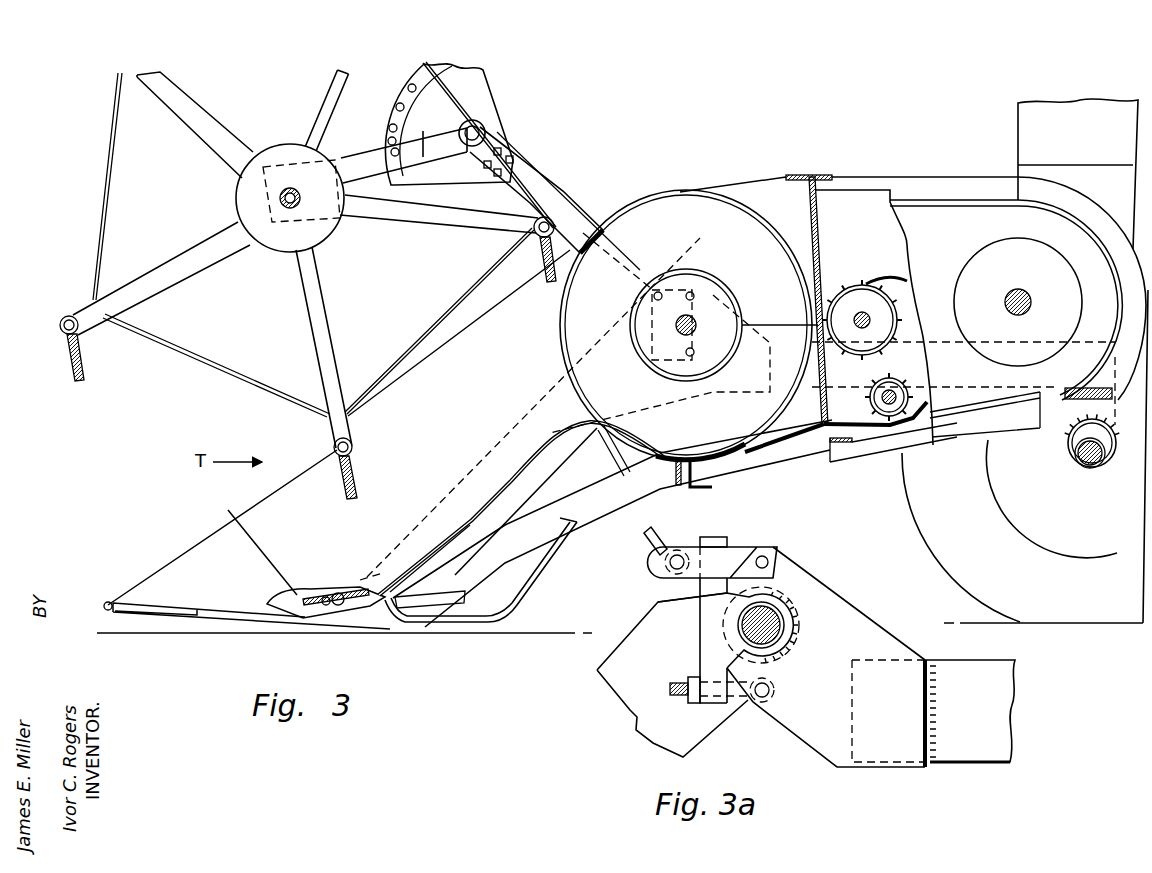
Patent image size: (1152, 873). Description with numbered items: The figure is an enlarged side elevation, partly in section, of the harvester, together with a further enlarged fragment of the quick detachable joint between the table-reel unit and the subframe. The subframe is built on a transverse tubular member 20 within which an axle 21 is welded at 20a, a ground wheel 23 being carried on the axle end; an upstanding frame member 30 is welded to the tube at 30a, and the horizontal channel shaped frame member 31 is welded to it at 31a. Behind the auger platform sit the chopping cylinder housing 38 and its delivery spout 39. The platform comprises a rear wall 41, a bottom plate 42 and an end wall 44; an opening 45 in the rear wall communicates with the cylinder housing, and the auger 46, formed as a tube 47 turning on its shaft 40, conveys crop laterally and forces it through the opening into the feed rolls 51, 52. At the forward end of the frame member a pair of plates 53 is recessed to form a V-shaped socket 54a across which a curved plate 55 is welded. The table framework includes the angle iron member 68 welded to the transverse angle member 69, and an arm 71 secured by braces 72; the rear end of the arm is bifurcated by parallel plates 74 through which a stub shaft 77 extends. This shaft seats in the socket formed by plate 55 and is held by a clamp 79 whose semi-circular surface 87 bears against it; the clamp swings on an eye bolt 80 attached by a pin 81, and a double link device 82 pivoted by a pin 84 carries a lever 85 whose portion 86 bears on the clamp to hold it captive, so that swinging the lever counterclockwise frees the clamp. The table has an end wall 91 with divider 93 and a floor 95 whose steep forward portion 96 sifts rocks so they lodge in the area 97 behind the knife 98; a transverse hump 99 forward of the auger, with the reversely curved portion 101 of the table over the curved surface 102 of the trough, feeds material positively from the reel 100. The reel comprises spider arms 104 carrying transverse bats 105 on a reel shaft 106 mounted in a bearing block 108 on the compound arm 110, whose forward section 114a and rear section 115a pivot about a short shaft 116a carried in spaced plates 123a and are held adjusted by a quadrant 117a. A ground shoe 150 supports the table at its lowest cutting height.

In FIG. 3, the axle supporting tubular member 20 is at (1098, 464).
In FIG. 3, the weld 20a is at (1090, 470).
In FIG. 3, the axle 21 is at (1068, 455).
In FIG. 3, the ground wheel 23 is at (934, 554).
In FIG. 3, the upstanding frame member 30 is at (1113, 400).
In FIG. 3, the weld 30a is at (1066, 432).
In FIG. 3, the channel shaped frame member 31 is at (935, 338).
In FIG. 3A, the channel shaped frame member 31 is at (960, 767).
In FIG. 3, the weld 31a is at (1078, 385).
In FIG. 3, the chopping cylinder housing 38 is at (945, 175).
In FIG. 3, the delivery spout 39 is at (1012, 128).
In FIG. 3, the shaft 40 is at (696, 333).
In FIG. 3, the rear wall 41 is at (820, 244).
In FIG. 3, the bottom plate 42 is at (787, 440).
In FIG. 3, the end wall 44 is at (747, 188).
In FIG. 3, the opening 45 is at (822, 402).
In FIG. 3, the lateral conveyor or auger 46 is at (558, 330).
In FIG. 3, the tube 47 is at (700, 278).
In FIG. 3, the feed roll 51 is at (846, 287).
In FIG. 3, the feed roll 52 is at (900, 386).
In FIG. 3, the plates 53 is at (756, 338).
In FIG. 3A, the plates 53 is at (818, 583).
In FIG. 3A, the V-shaped socket 54a is at (702, 596).
In FIG. 3A, the plate 55 is at (790, 627).
In FIG. 3, the angle iron member 68 is at (600, 514).
In FIG. 3, the transverse angle member 69 is at (675, 486).
In FIG. 3, the arm 71 is at (484, 456).
In FIG. 3, the braces 72 is at (600, 456).
In FIG. 3, the parallel plates 74 is at (591, 358).
In FIG. 3A, the parallel plates 74 is at (598, 668).
In FIG. 3A, the stub shaft 77 is at (740, 627).
In FIG. 3A, the clamp 79 is at (723, 537).
In FIG. 3A, the eye bolt 80 is at (738, 704).
In FIG. 3A, the pin 81 is at (773, 691).
In FIG. 3A, the double link device 82 is at (747, 548).
In FIG. 3A, the pin 84 is at (768, 562).
In FIG. 3A, the lever 85 is at (648, 551).
In FIG. 3A, the portion 86 is at (688, 553).
In FIG. 3A, the semi-circular surface 87 is at (737, 649).
In FIG. 3, the end wall 91 is at (414, 427).
In FIG. 3, the divider 93 is at (123, 588).
In FIG. 3, the floor 95 is at (497, 489).
In FIG. 3, the forward portion 96 is at (448, 538).
In FIG. 3, the general area 97 is at (366, 591).
In FIG. 3, the knife 98 is at (322, 591).
In FIG. 3, the transverse hump 99 is at (537, 435).
In FIG. 3, the reel 100 is at (185, 372).
In FIG. 3, the reversely curved portion 101 is at (692, 456).
In FIG. 3, the curved surface 102 is at (713, 470).
In FIG. 3, the spider arms 104 is at (197, 262).
In FIG. 3, the transverse bats 105 is at (82, 357).
In FIG. 3, the reel shaft 106 is at (288, 208).
In FIG. 3, the bearing block 108 is at (265, 198).
In FIG. 3, the compound arm 110 is at (548, 172).
In FIG. 3, the forward section 114a is at (355, 152).
In FIG. 3, the rear section 115a is at (562, 207).
In FIG. 3, the short shaft 116a is at (482, 126).
In FIG. 3, the quadrant 117a is at (498, 122).
In FIG. 3, the spaced plates 123a is at (447, 172).
In FIG. 3, the ground shoe 150 is at (528, 600).